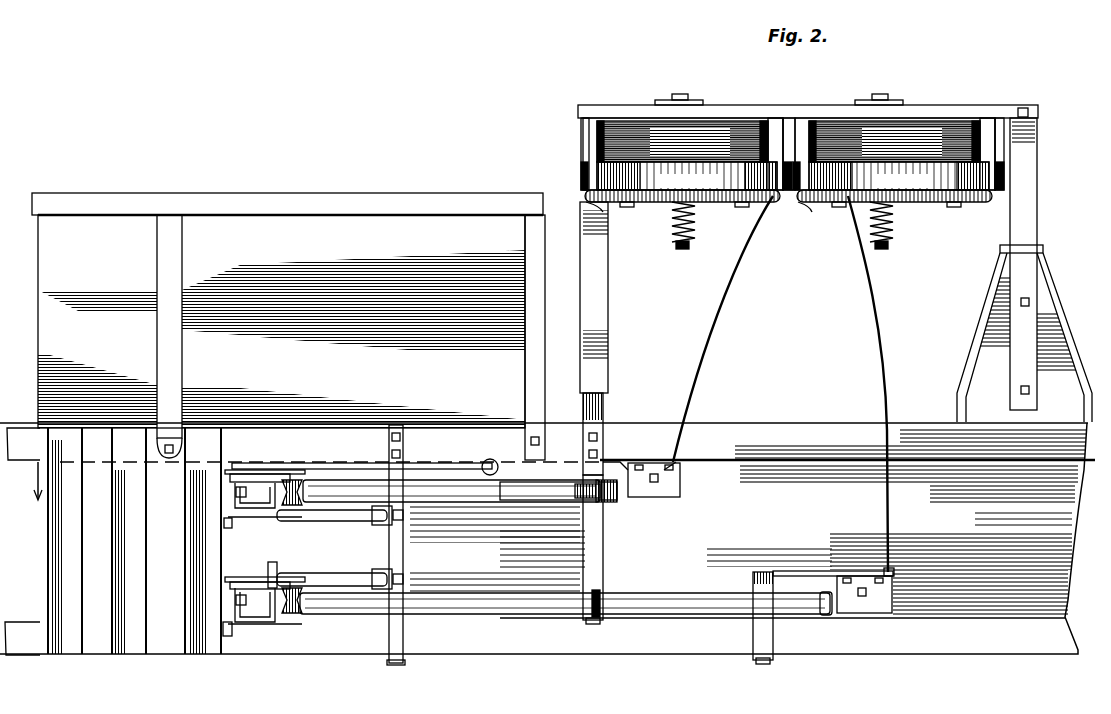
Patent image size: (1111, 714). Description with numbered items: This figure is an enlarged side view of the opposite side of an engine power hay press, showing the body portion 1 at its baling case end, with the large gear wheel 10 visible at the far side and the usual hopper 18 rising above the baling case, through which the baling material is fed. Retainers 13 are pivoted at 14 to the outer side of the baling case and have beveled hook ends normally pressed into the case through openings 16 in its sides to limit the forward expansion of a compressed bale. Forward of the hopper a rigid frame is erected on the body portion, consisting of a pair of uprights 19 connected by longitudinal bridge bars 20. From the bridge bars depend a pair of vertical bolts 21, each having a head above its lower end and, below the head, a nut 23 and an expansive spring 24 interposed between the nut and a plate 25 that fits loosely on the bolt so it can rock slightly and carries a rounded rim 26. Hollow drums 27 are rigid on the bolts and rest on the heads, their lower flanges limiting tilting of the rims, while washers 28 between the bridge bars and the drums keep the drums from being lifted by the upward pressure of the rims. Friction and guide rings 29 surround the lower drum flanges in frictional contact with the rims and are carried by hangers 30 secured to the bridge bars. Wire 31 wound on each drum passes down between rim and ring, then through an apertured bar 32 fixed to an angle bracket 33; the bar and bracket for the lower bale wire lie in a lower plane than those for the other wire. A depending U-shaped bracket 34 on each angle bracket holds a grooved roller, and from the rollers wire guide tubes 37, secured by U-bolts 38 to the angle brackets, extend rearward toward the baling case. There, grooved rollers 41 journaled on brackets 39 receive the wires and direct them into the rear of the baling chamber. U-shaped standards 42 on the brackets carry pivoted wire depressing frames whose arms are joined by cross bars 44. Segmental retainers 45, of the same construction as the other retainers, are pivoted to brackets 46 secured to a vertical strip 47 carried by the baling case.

The body portion 1 is at (822, 417).
The gear wheel 10 is at (140, 520).
The retainers 13 is at (345, 479).
The pivot 14 is at (400, 470).
The openings 16 is at (232, 470).
The hopper 18 is at (288, 326).
The uprights 19 is at (609, 290).
The bridge bars 20 is at (800, 96).
The vertical bolts 21 is at (682, 94).
The nuts 23 is at (676, 247).
The expansive springs 24 is at (696, 230).
The plates 25 is at (660, 206).
The rounded rim 26 is at (584, 196).
The hollow drums 27 is at (612, 122).
The washers 28 is at (636, 122).
The friction and guide rings 29 is at (792, 182).
The hangers 30 is at (790, 118).
The wire 31 is at (713, 312).
The apertured bar 32 is at (660, 462).
The angle bracket 33 is at (600, 443).
The U-shaped bracket 34 is at (681, 490).
The wire guide tubes 37 is at (545, 502).
The U-bolts 38 is at (600, 502).
The brackets 39 is at (296, 638).
The grooved rollers 41 is at (292, 480).
The U-shaped standards 42 is at (232, 492).
The cross bars 44 is at (258, 508).
The segmental retainers 45 is at (276, 548).
The brackets 46 is at (405, 514).
The vertical strip 47 is at (404, 634).